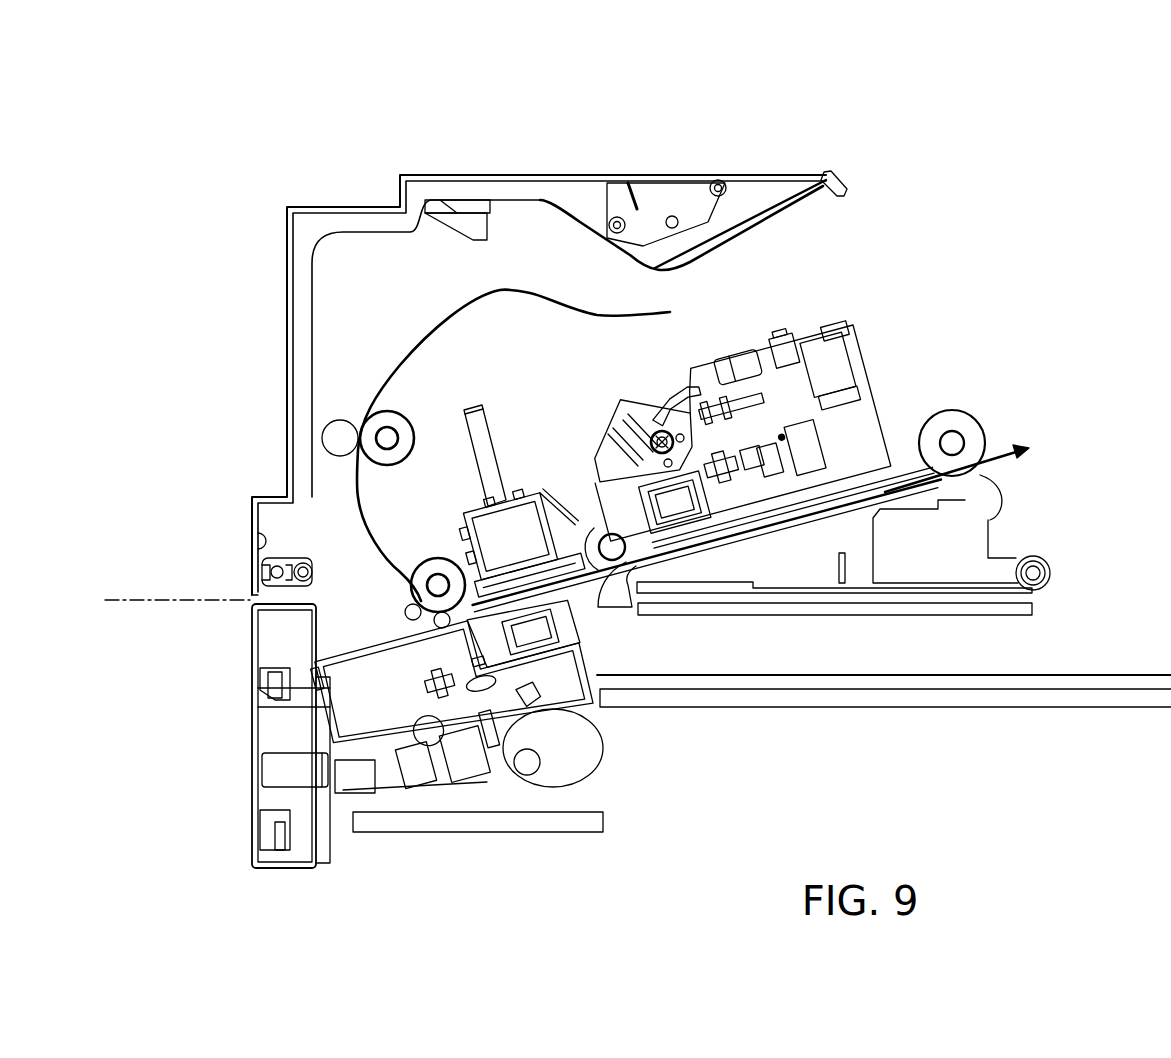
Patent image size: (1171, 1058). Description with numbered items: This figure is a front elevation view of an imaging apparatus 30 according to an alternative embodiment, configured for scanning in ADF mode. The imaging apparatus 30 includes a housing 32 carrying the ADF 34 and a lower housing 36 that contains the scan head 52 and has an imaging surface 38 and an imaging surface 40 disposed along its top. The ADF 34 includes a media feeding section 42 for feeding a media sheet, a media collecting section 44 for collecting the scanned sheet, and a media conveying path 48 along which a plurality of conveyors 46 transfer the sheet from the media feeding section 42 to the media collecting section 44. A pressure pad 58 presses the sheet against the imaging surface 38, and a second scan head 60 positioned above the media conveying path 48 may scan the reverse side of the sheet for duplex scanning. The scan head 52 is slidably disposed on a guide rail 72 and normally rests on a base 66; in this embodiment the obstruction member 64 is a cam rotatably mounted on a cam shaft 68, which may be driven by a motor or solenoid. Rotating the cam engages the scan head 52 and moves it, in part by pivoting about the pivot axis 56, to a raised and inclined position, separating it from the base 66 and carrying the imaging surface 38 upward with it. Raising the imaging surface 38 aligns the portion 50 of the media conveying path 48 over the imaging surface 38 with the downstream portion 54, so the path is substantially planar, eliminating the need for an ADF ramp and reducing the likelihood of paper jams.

The imaging apparatus 30 is at (1048, 124).
The housing 32 is at (344, 206).
The ADF 34 is at (271, 445).
The housing 36 is at (262, 650).
The imaging surface 38 is at (567, 612).
The imaging surface 40 is at (948, 616).
The media feeding section 42 is at (820, 240).
The media collecting section 44 is at (1055, 440).
The conveyors 46 is at (390, 432).
The media conveying path 48 is at (452, 306).
The portion of the media conveying path 50 is at (492, 572).
The scan head 52 is at (363, 712).
The portion of the media conveying path 54 is at (818, 528).
The pivot axis 56 is at (427, 722).
The pressure pad 58 is at (527, 532).
The second scan head 60 is at (863, 414).
The obstruction member 64 is at (575, 745).
The base 66 is at (416, 826).
The cam shaft 68 is at (530, 765).
The guide rail 72 is at (850, 692).